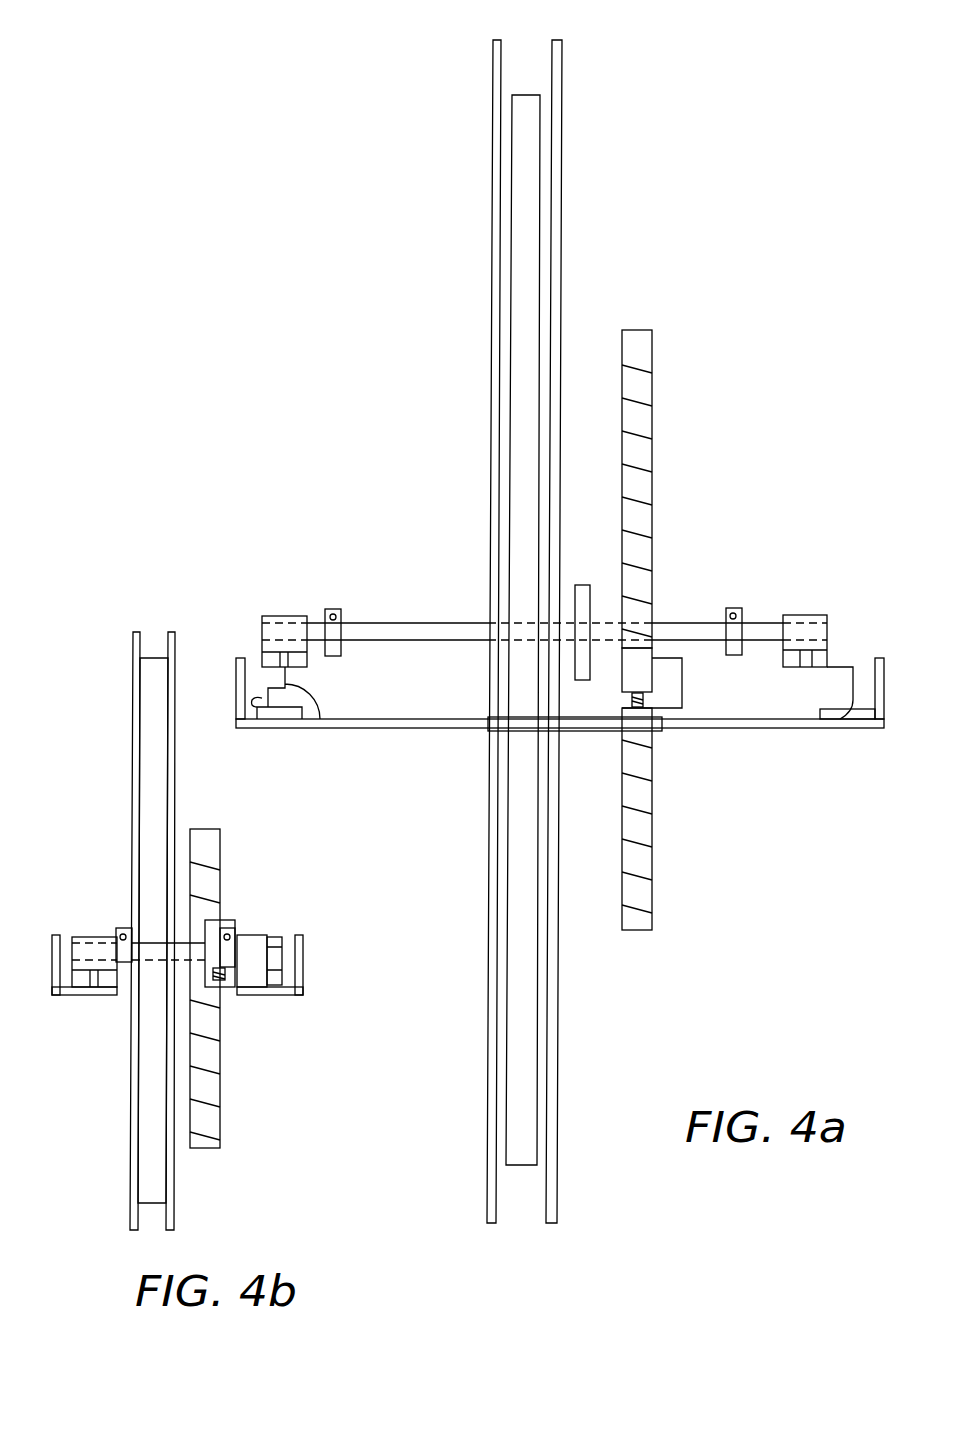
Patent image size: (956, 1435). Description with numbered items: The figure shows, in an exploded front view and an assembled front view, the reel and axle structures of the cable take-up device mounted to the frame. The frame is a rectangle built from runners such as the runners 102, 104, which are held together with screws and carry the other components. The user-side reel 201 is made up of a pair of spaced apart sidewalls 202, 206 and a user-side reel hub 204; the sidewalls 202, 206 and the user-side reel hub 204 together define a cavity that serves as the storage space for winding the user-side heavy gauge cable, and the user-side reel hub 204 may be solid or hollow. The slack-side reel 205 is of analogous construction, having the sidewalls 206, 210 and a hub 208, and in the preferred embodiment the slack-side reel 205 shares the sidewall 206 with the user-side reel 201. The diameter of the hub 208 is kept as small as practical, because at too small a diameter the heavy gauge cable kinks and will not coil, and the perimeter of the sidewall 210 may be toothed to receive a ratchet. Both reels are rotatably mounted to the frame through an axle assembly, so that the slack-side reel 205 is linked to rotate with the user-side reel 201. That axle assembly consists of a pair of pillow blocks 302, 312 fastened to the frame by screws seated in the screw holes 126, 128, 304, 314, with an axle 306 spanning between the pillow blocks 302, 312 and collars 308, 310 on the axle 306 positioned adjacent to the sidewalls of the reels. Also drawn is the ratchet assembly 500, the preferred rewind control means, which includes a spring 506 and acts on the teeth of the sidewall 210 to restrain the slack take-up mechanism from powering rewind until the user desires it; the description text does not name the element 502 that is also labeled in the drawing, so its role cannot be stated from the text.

In FIG. 4A, the runner 102 is at (238, 660).
In FIG. 4B, the runner 102 is at (54, 935).
In FIG. 4A, the runner 104 is at (880, 657).
In FIG. 4B, the runner 104 is at (305, 965).
In FIG. 4A, the screw hole 126 is at (262, 712).
In FIG. 4B, the screw hole 126 is at (92, 1021).
In FIG. 4A, the screw hole 128 is at (847, 700).
In FIG. 4B, the screw hole 128 is at (270, 991).
In FIG. 4A, the user-side reel 201 is at (524, 1237).
In FIG. 4B, the user-side reel 201 is at (155, 1250).
In FIG. 4A, the sidewall 202 is at (493, 60).
In FIG. 4B, the sidewall 202 is at (133, 660).
In FIG. 4A, the user-side reel hub 204 is at (525, 95).
In FIG. 4B, the user-side reel hub 204 is at (158, 658).
In FIG. 4A, the slack-side reel 205 is at (585, 342).
In FIG. 4B, the slack-side reel 205 is at (180, 1150).
In FIG. 4A, the sidewall 206 is at (571, 64).
In FIG. 4B, the sidewall 206 is at (176, 780).
In FIG. 4A, the hub 208 is at (585, 583).
In FIG. 4A, the sidewall 210 is at (664, 354).
In FIG. 4B, the sidewall 210 is at (232, 850).
In FIG. 4A, the pillow block 302 is at (292, 616).
In FIG. 4B, the pillow block 302 is at (100, 937).
In FIG. 4A, the screw hole 304 is at (320, 719).
In FIG. 4B, the screw hole 304 is at (95, 988).
In FIG. 4A, the axle 306 is at (312, 622).
In FIG. 4B, the axle 306 is at (152, 943).
In FIG. 4A, the collar 308 is at (343, 612).
In FIG. 4B, the collar 308 is at (127, 930).
In FIG. 4A, the collar 310 is at (735, 607).
In FIG. 4B, the collar 310 is at (232, 937).
In FIG. 4A, the pillow block 312 is at (803, 614).
In FIG. 4B, the pillow block 312 is at (250, 980).
In FIG. 4A, the screw hole 314 is at (801, 668).
In FIG. 4A, the ratchet assembly 500 is at (682, 678).
In FIG. 4B, the ratchet assembly 500 is at (212, 922).
In FIG. 4A, the carriage plate 502 is at (604, 733).
In FIG. 4A, the spring 506 is at (645, 708).
In FIG. 4B, the spring 506 is at (221, 982).